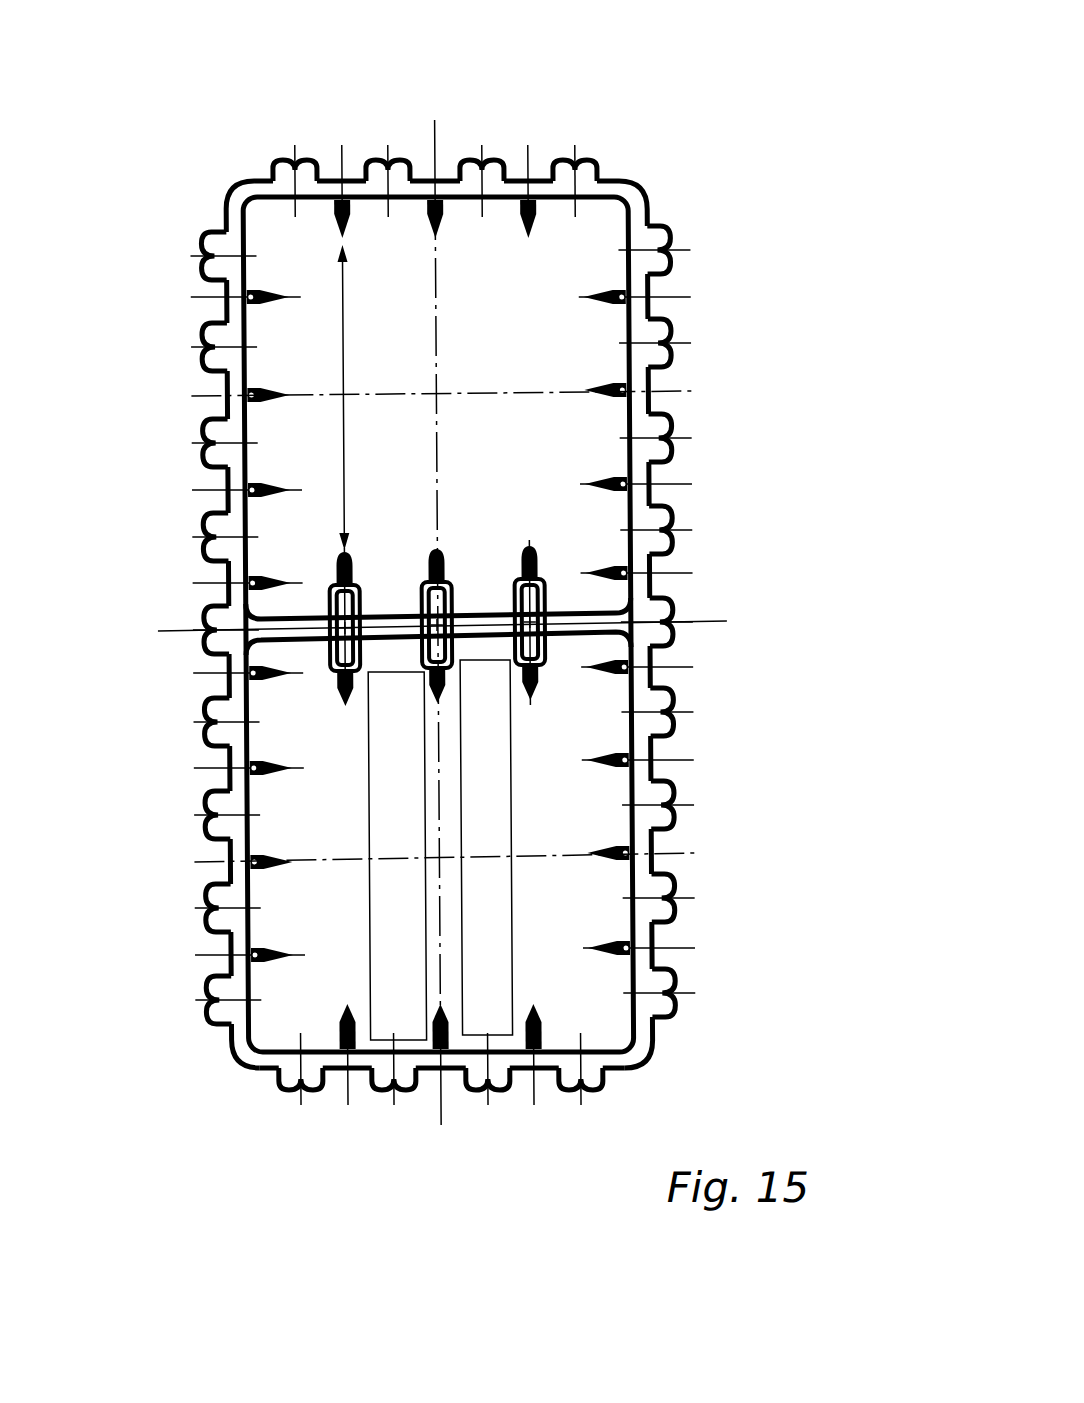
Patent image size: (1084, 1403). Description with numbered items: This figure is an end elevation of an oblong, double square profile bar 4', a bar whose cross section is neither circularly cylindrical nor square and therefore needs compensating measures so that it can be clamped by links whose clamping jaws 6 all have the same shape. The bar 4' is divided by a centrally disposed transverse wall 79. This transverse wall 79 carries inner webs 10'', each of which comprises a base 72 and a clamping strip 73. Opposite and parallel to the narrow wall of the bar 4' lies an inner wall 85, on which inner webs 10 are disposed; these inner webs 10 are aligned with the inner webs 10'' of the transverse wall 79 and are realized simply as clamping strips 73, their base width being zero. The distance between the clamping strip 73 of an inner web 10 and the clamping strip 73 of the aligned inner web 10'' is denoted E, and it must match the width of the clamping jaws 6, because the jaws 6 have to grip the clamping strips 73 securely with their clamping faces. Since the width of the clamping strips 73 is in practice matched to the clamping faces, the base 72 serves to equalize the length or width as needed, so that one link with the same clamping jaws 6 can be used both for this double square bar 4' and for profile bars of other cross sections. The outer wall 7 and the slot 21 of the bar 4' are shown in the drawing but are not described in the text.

The profile bar 4' is at (484, 580).
The outer wall 7 is at (653, 743).
The undercut slot 21 is at (657, 841).
The inner wall 85 is at (557, 200).
The transverse wall 79 is at (600, 627).
The base 72 is at (358, 597).
The clamping strip 73 is at (349, 234).
The inner web 10 is at (442, 607).
The inner web 10'' is at (522, 622).
The clamping jaw 6 is at (402, 921).